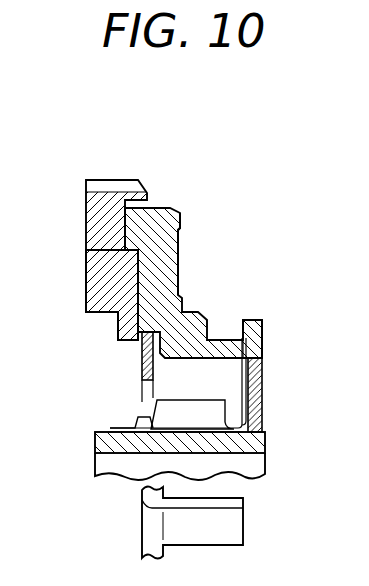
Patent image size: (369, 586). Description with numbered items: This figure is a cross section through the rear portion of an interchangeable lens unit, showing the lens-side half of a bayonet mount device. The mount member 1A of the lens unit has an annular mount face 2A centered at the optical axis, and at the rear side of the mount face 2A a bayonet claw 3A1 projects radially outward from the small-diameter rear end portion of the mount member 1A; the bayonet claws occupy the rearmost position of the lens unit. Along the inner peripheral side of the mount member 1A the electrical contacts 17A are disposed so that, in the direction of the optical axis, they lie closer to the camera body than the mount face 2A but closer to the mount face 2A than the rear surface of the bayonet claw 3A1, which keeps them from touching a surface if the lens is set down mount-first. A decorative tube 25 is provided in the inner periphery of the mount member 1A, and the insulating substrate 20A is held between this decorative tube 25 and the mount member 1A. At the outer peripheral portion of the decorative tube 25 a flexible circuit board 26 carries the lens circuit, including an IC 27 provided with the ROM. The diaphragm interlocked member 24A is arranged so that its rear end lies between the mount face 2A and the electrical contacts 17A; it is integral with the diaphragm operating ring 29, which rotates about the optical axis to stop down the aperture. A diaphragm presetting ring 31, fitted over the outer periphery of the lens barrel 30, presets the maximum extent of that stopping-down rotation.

The mount member 1A is at (168, 208).
The annular mount face 2A is at (183, 220).
The bayonet claw 3A1 is at (267, 325).
The insulating substrate 20A is at (267, 352).
The electrical contacts 17A is at (250, 393).
The diaphragm interlocked member 24A is at (237, 522).
The decorative tube 25 is at (96, 434).
The flexible circuit board 26 is at (263, 436).
The IC 27 is at (217, 416).
The diaphragm operating ring 29 is at (138, 378).
The lens barrel 30 is at (97, 313).
The diaphragm presetting ring 31 is at (93, 210).